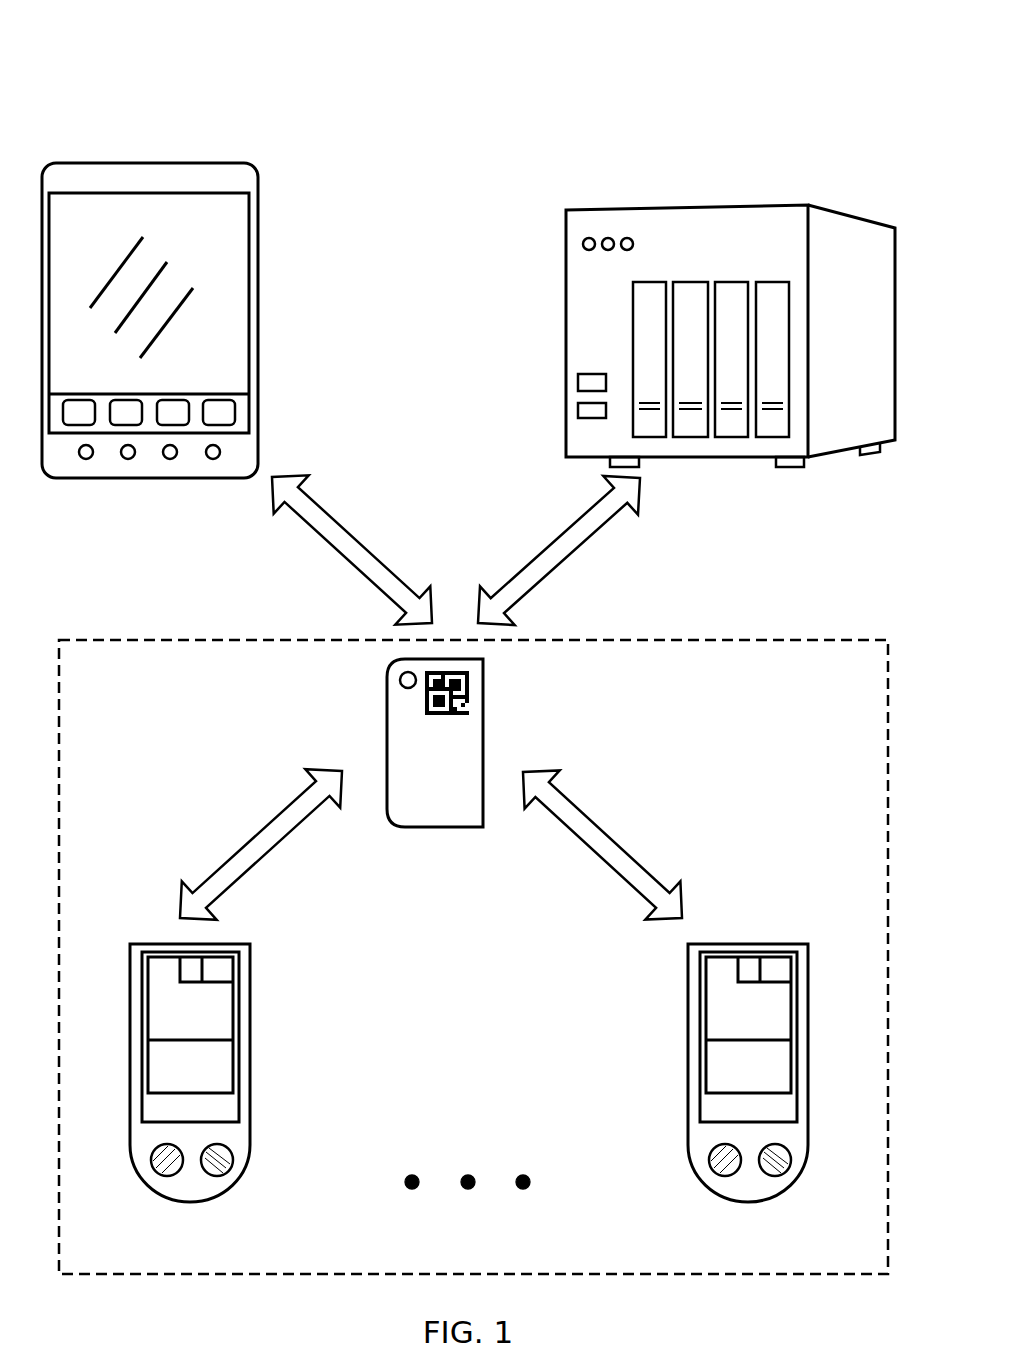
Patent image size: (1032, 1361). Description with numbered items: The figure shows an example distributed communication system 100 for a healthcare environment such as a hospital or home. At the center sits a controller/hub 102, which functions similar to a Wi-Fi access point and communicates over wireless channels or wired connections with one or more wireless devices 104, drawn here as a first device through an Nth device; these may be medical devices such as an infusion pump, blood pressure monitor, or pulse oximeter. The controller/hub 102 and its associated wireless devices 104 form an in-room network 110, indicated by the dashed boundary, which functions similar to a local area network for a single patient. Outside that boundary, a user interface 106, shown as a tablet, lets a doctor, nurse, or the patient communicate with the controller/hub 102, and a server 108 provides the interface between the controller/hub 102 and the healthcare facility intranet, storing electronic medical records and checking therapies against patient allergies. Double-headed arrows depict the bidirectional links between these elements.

The distributed communication system 100 is at (823, 54).
The controller/hub 102 is at (483, 705).
The wireless devices 104 is at (250, 970).
The user interface 106 is at (258, 196).
The server 108 is at (832, 213).
The in-room network 110 is at (815, 640).